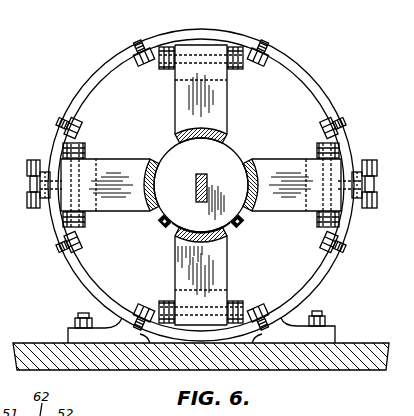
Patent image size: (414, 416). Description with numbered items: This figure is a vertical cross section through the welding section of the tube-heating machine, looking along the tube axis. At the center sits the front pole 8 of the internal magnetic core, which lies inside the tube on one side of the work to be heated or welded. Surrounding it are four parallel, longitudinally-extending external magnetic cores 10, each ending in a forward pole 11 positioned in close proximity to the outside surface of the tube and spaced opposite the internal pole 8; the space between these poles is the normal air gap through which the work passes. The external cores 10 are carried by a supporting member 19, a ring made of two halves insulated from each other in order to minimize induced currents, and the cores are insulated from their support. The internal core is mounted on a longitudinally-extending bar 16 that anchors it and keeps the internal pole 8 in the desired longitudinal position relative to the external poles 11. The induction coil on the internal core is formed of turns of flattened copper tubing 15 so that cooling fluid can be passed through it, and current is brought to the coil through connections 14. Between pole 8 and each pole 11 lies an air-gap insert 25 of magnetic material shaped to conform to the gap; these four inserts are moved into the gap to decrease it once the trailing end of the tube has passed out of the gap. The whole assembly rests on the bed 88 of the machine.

The front pole 8 is at (226, 163).
The external magnetic core 10 is at (208, 55).
The forward pole 11 is at (188, 124).
The connections 14 is at (168, 222).
The flattened copper tubing 15 is at (170, 228).
The bar 16 is at (195, 184).
The supporting member 19 is at (300, 70).
The air-gap insert 25 is at (155, 161).
The bed 88 is at (351, 371).